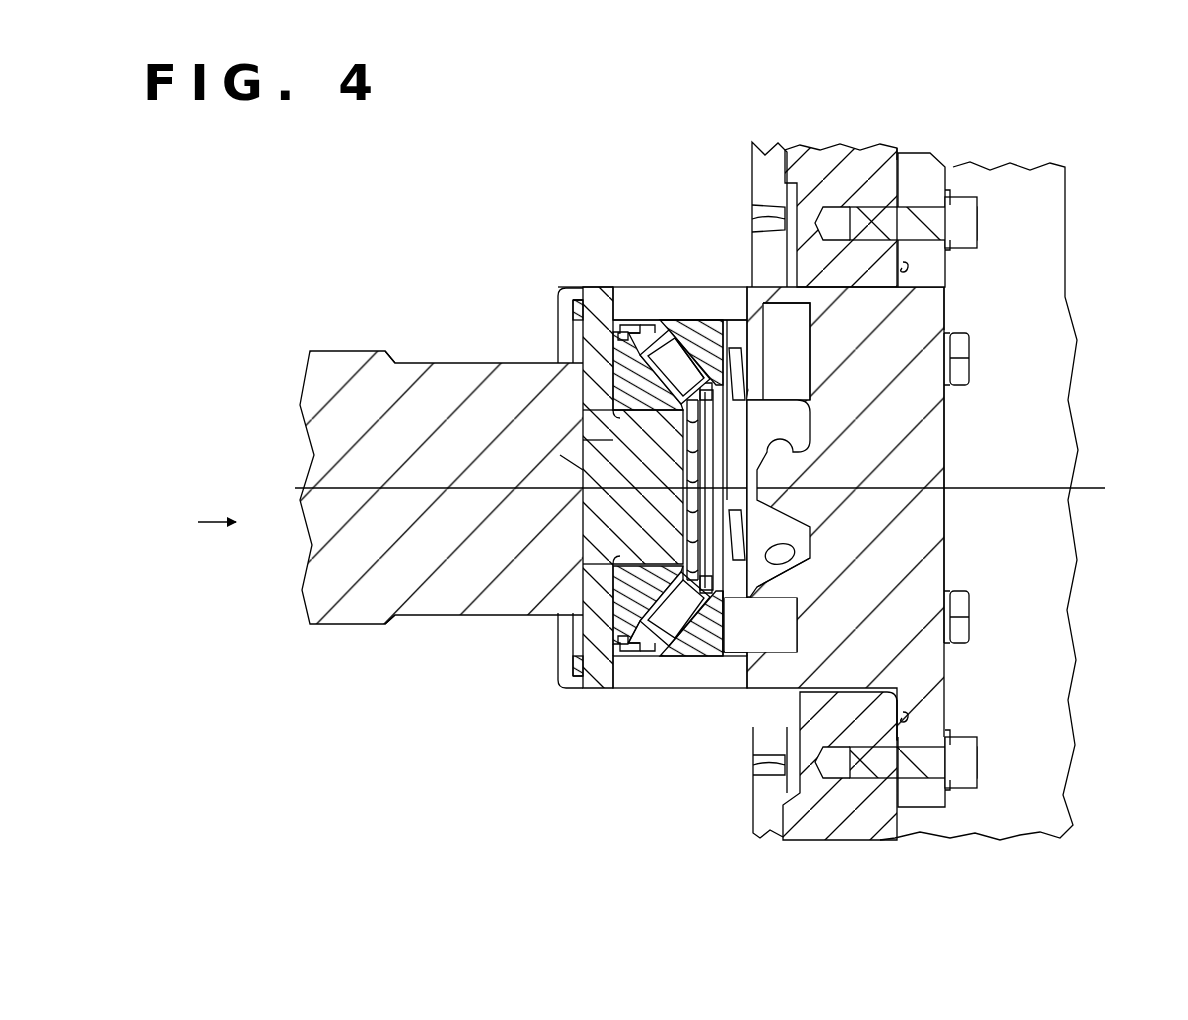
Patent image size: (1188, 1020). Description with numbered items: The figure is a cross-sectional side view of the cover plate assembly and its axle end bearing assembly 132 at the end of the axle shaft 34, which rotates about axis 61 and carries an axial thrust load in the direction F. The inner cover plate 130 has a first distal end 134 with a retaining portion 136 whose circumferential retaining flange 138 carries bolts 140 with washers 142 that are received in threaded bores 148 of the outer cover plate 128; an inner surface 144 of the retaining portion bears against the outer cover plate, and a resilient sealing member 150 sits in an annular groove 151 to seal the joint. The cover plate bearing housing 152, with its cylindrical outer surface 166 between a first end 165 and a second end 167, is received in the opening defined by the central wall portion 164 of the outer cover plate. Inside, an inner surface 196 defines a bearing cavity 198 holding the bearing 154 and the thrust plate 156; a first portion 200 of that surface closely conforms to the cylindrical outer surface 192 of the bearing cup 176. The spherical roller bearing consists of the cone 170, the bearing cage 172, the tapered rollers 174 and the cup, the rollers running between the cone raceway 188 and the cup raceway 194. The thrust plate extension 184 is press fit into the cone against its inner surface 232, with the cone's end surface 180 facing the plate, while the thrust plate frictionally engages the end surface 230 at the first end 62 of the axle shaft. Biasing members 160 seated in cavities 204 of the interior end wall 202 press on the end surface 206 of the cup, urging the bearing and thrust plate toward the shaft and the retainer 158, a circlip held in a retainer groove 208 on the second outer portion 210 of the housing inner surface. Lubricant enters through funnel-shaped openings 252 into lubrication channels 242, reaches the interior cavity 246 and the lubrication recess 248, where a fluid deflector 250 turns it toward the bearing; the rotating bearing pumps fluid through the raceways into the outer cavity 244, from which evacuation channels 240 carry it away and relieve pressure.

The axle shaft 34 is at (320, 578).
The axis 61 is at (1105, 487).
The first end of axle shaft 62 is at (425, 615).
The outer cover plate 128 is at (900, 195).
The inner cover plate 130 is at (834, 513).
The axle end bearing assembly 132 is at (583, 205).
The first distal end 134 is at (932, 402).
The retaining portion 136 is at (938, 285).
The circumferential retaining flange 138 is at (940, 162).
The bolts 140 is at (972, 222).
The washers 142 is at (958, 195).
The inner surface of retaining portion 144 is at (930, 175).
The threaded bores 148 is at (862, 205).
The resilient sealing member 150 is at (908, 266).
The annular groove 151 is at (905, 715).
The cover plate bearing housing 152 is at (718, 660).
The bearing 154 is at (608, 662).
The thrust plate 156 is at (593, 435).
The retainer 158 is at (580, 310).
The biasing members 160 is at (740, 330).
The central wall portion 164 is at (797, 285).
The first end of bearing housing 165 is at (853, 313).
The cylindrical outer surface 166 is at (703, 300).
The second end of bearing housing 167 is at (590, 288).
The cone 170 is at (615, 350).
The bearing cage 172 is at (630, 340).
The rollers 174 is at (645, 345).
The bearing cup 176 is at (703, 335).
The end surface 180 is at (610, 588).
The thrust plate extension 184 is at (633, 487).
The cone raceway 188 is at (640, 635).
The cylindrical outer surface of cup 192 is at (690, 650).
The cup raceway 194 is at (700, 660).
The inner surface of bearing housing 196 is at (696, 318).
The bearing cavity 198 is at (668, 325).
The first portion of inner surface 200 is at (689, 358).
The interior end wall 202 is at (746, 300).
The cavities 204 is at (790, 643).
The end surface of cup 206 is at (818, 604).
The retainer groove 208 is at (565, 690).
The second outer portion of inner surface 210 is at (593, 305).
The end surface of axle shaft 230 is at (583, 460).
The inner surface of cone 232 is at (600, 450).
The evacuation channels 240 is at (618, 275).
The lubrication channels 242 is at (786, 351).
The outer cavity 244 is at (626, 330).
The interior cavity 246 is at (737, 453).
The lubrication recess 248 is at (787, 537).
The fluid deflector 250 is at (760, 493).
The funnel-shaped opening 252 is at (790, 300).
The axial thrust load F is at (204, 523).